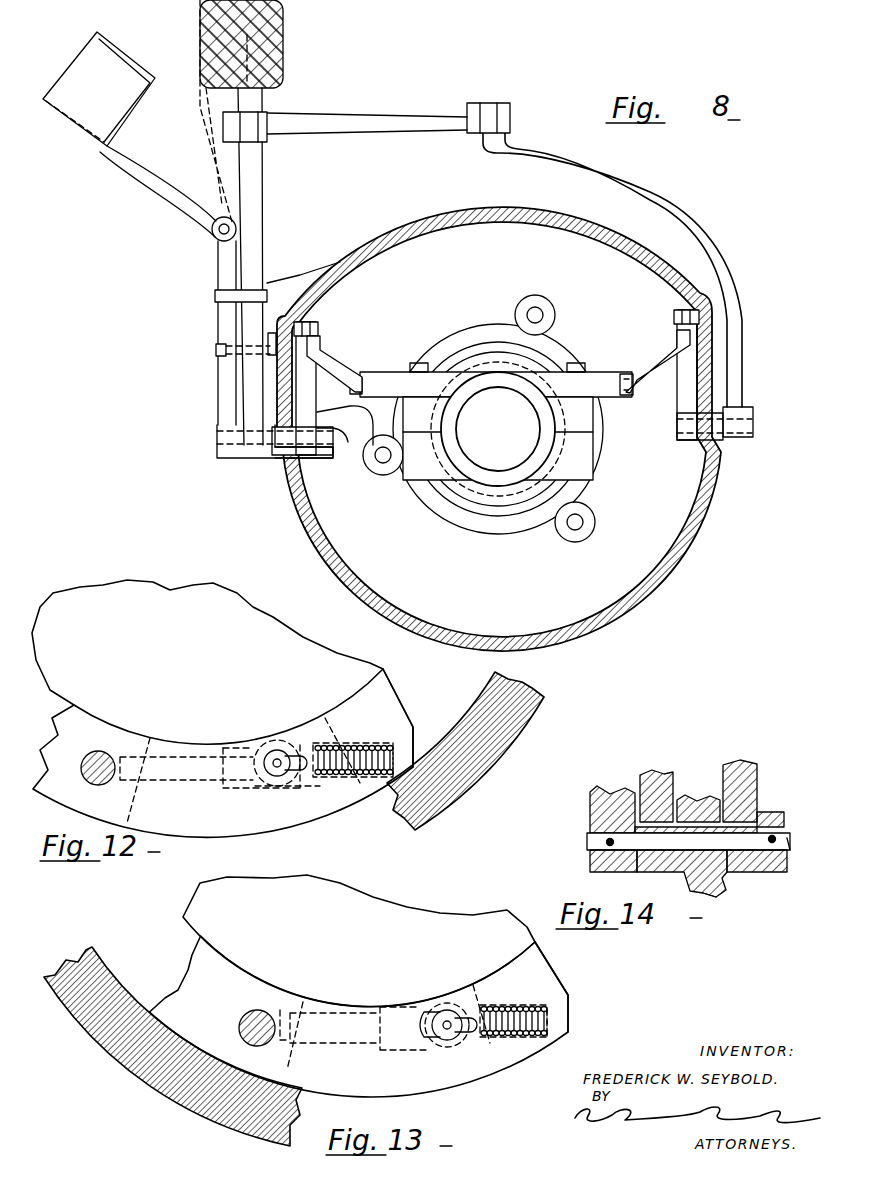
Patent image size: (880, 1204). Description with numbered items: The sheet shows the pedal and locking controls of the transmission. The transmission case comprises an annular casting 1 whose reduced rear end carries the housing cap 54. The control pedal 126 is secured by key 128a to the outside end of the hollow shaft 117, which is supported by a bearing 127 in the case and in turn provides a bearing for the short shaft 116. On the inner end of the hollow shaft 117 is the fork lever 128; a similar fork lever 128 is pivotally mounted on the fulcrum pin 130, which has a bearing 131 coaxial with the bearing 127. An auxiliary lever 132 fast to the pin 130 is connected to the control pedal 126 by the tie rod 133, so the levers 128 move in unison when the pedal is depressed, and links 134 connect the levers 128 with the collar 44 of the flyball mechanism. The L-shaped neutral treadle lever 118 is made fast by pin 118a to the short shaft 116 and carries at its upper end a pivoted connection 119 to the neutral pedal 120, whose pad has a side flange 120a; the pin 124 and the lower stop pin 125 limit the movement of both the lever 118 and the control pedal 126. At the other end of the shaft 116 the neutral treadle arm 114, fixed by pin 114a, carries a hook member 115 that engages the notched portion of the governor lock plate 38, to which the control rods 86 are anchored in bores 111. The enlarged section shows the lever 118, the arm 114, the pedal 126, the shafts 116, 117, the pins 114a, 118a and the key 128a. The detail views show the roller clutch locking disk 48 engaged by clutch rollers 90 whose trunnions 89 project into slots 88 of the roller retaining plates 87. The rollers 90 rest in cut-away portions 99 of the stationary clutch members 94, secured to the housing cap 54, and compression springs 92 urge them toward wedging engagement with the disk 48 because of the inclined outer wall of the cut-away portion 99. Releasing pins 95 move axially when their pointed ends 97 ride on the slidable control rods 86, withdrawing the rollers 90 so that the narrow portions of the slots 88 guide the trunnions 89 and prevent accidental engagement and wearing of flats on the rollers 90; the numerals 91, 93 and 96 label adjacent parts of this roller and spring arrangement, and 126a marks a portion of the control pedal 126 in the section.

In FIG. 8, the annular casting 1 is at (410, 224).
In FIG. 14, the annular casting 1 is at (716, 890).
In FIG. 8, the governor lock plate 38 is at (491, 414).
In FIG. 8, the collar 44 is at (380, 372).
In FIG. 12, the roller clutch locking disk 48 is at (103, 583).
In FIG. 13, the roller clutch locking disk 48 is at (192, 898).
In FIG. 12, the housing cap 54 is at (480, 694).
In FIG. 13, the housing cap 54 is at (87, 951).
In FIG. 12, the control rods 86 is at (100, 752).
In FIG. 13, the control rods 86 is at (246, 1014).
In FIG. 12, the roller retaining plates 87 is at (72, 722).
In FIG. 13, the roller retaining plates 87 is at (184, 961).
In FIG. 12, the slots 88 is at (289, 782).
In FIG. 13, the slots 88 is at (430, 1045).
In FIG. 12, the trunnions 89 is at (272, 750).
In FIG. 13, the trunnions 89 is at (443, 1003).
In FIG. 12, the clutch rollers 90 is at (300, 742).
In FIG. 13, the clutch rollers 90 is at (458, 1000).
In FIG. 12, the slot 91 is at (325, 742).
In FIG. 13, the slot 91 is at (478, 1001).
In FIG. 12, the compression springs 92 is at (364, 743).
In FIG. 13, the compression springs 92 is at (519, 1004).
In FIG. 12, the spring seat 93 is at (395, 749).
In FIG. 13, the spring seat 93 is at (548, 1008).
In FIG. 12, the stationary clutch members 94 is at (395, 707).
In FIG. 13, the stationary clutch members 94 is at (571, 993).
In FIG. 12, the releasing pins 95 is at (226, 748).
In FIG. 13, the releasing pins 95 is at (397, 1007).
In FIG. 12, the adjuster housing 96 is at (177, 781).
In FIG. 13, the adjuster housing 96 is at (320, 1040).
In FIG. 13, the pointed ends 97 is at (288, 1010).
In FIG. 12, the cut-away portions 99 is at (250, 790).
In FIG. 13, the cut-away portions 99 is at (388, 1050).
In FIG. 8, the bores 111 is at (553, 315).
In FIG. 8, the neutral treadle arm 114 is at (349, 436).
In FIG. 14, the neutral treadle arm 114 is at (775, 872).
In FIG. 14, the pin 114a is at (790, 842).
In FIG. 8, the hook member 115 is at (408, 428).
In FIG. 8, the short shaft 116 is at (231, 460).
In FIG. 14, the short shaft 116 is at (590, 845).
In FIG. 8, the hollow shaft 117 is at (273, 456).
In FIG. 14, the hollow shaft 117 is at (676, 864).
In FIG. 8, the neutral treadle lever 118 is at (217, 393).
In FIG. 14, the neutral treadle lever 118 is at (590, 803).
In FIG. 14, the pin 118a is at (600, 858).
In FIG. 8, the pivoted connection 119 is at (168, 206).
In FIG. 8, the neutral pedal 120 is at (99, 88).
In FIG. 8, the side flange 120a is at (125, 56).
In FIG. 8, the pin 124 is at (215, 296).
In FIG. 8, the lower stop pin 125 is at (216, 349).
In FIG. 8, the control pedal 126 is at (262, 200).
In FIG. 14, the control pedal 126 is at (670, 773).
In FIG. 14, the arm boss 126a is at (679, 797).
In FIG. 8, the bearing 127 is at (294, 456).
In FIG. 8, the fork lever 128 is at (313, 395).
In FIG. 14, the fork lever 128 is at (757, 772).
In FIG. 14, the key 128a is at (762, 812).
In FIG. 8, the fulcrum pin 130 is at (677, 431).
In FIG. 8, the bearing 131 is at (724, 440).
In FIG. 8, the auxiliary lever 132 is at (681, 221).
In FIG. 8, the tie rod 133 is at (382, 106).
In FIG. 8, the links 134 is at (333, 363).